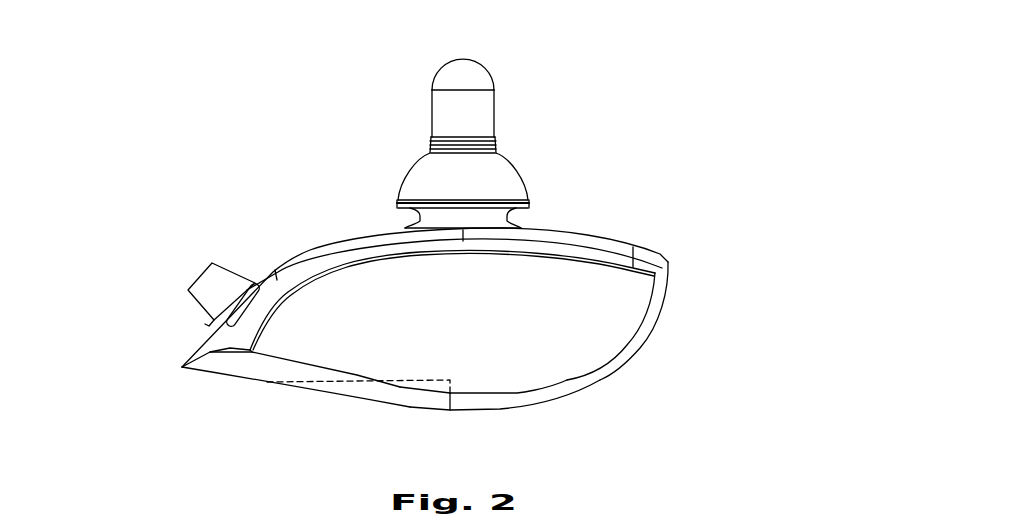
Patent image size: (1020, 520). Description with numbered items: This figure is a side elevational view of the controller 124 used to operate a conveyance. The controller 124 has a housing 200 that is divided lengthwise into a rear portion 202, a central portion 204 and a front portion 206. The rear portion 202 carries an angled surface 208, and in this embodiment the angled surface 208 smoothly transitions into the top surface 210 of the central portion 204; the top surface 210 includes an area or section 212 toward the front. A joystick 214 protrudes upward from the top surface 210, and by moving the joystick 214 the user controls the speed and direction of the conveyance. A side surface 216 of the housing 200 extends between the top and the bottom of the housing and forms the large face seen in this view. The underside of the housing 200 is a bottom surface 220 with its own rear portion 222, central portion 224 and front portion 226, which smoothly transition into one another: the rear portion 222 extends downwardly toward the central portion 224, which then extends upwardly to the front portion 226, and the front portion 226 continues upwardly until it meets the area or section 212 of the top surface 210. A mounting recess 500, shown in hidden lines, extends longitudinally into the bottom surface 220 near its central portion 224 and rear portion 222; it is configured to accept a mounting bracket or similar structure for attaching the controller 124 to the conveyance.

The controller 124 is at (627, 44).
The housing 200 is at (187, 153).
The rear portion 202 is at (148, 307).
The central portion 204 is at (350, 172).
The front portion 206 is at (701, 224).
The angled surface 208 is at (262, 272).
The top surface 210 is at (385, 233).
The area or section 212 is at (602, 238).
The joystick 214 is at (495, 103).
The side surface 216 is at (482, 335).
The bottom surface 220 is at (596, 421).
The rear portion 222 is at (266, 396).
The central portion 224 is at (501, 421).
The front portion 226 is at (636, 354).
The mounting recess 500 is at (380, 385).